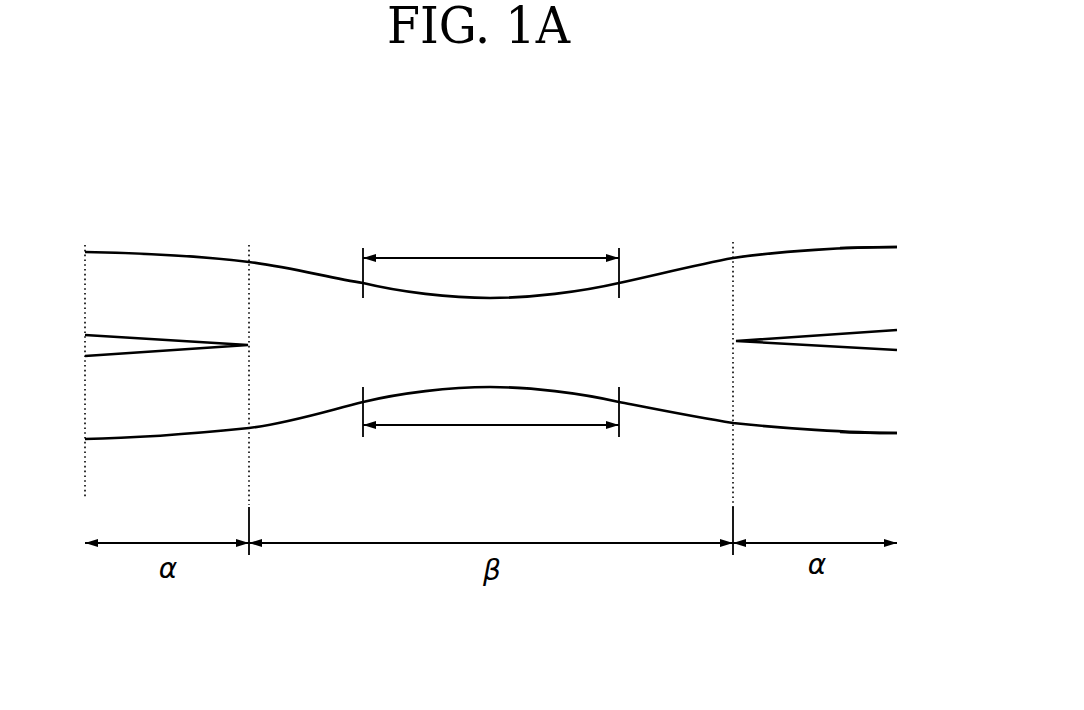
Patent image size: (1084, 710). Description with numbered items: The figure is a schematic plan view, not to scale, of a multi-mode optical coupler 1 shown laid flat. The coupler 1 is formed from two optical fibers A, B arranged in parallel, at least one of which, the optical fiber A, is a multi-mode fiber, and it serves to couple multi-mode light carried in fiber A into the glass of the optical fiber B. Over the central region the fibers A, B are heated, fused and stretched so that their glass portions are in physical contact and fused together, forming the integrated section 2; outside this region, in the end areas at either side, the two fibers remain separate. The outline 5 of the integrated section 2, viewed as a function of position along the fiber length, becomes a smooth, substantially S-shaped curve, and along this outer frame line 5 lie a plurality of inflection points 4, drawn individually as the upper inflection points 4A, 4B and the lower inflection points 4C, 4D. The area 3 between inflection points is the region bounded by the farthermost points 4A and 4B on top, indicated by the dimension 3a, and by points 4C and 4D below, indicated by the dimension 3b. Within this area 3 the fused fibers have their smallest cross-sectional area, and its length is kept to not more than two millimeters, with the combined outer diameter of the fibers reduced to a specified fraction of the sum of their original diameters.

The multi-mode optical coupler 1 is at (826, 192).
The integrated section 2 is at (335, 320).
The area between inflection points 3 is at (491, 345).
The area between inflection points 3a is at (491, 262).
The area between inflection points 3b is at (491, 425).
The inflection points 4 is at (494, 338).
The inflection point 4A is at (363, 283).
The inflection point 4B is at (619, 283).
The inflection point 4C is at (363, 402).
The inflection point 4D is at (619, 402).
The outline 5 is at (697, 266).
The optical fiber A is at (873, 256).
The optical fiber B is at (857, 430).